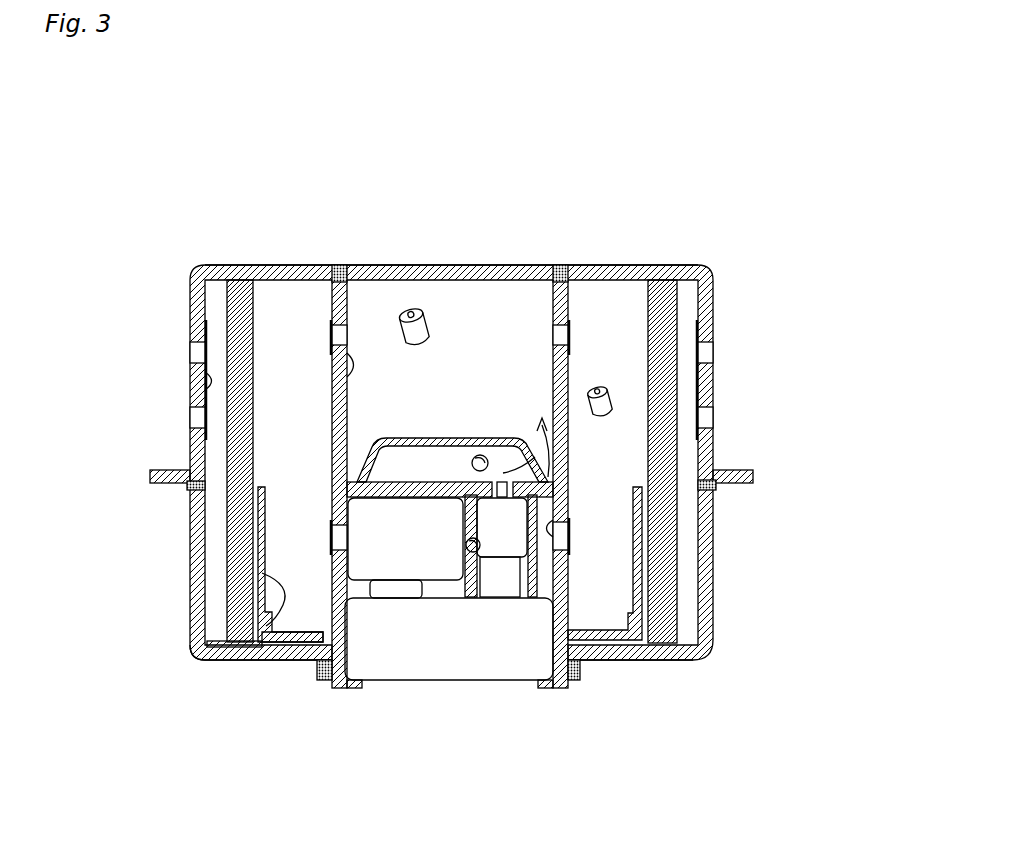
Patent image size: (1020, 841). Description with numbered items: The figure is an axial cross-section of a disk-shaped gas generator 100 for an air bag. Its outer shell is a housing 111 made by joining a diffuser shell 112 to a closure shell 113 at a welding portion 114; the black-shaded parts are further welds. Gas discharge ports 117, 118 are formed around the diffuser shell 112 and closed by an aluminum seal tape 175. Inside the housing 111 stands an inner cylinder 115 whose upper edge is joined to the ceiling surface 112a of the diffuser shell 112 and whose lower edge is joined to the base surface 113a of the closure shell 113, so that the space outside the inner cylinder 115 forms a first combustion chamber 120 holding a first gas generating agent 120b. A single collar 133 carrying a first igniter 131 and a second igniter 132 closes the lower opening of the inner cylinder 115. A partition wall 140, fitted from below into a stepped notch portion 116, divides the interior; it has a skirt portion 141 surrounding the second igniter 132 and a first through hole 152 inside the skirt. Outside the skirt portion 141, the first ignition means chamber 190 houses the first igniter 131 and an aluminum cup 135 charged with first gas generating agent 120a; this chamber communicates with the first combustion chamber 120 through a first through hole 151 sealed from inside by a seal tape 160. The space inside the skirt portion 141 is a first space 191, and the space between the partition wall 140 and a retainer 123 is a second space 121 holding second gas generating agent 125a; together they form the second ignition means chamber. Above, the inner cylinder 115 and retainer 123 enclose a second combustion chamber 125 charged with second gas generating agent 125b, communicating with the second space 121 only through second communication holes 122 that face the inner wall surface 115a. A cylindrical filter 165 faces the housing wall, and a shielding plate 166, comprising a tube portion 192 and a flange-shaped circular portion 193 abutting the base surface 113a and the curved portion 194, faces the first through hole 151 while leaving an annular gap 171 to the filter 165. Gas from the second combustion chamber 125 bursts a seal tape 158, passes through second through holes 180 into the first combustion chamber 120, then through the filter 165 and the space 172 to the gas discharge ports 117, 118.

The gas generator 100 is at (483, 441).
The housing 111 is at (554, 459).
The diffuser shell 112 is at (708, 448).
The ceiling surface 112a is at (275, 277).
The closure shell 113 is at (710, 527).
The base surface 113a is at (267, 663).
The welding portion 114 is at (187, 495).
The inner cylinder 115 is at (307, 660).
The inner wall surface 115a is at (333, 383).
The stepped notch portion 116 is at (330, 475).
The gas discharge port 117 is at (705, 350).
The gas discharge port 118 is at (705, 417).
The first combustion chamber 120 is at (620, 607).
The first gas generating agent 120a is at (466, 546).
The first gas generating agent 120b is at (600, 420).
The second space 121 is at (449, 477).
The second communication holes 122 is at (353, 453).
The retainer 123 is at (492, 437).
The second combustion chamber 125 is at (523, 329).
The second gas generating agent 125a is at (468, 453).
The second gas generating agent 125b is at (410, 312).
The first igniter 131 is at (398, 593).
The second igniter 132 is at (502, 583).
The collar 133 is at (437, 680).
The aluminum cup 135 is at (428, 531).
The partition wall 140 is at (412, 447).
The skirt portion 141 is at (647, 593).
The first through hole 151 is at (333, 540).
The first through hole 152 is at (502, 487).
The seal tape 158 is at (570, 333).
The seal tape 160 is at (562, 525).
The cylindrical filter 165 is at (665, 538).
The shielding plate 166 is at (233, 710).
The annular gap 171 is at (260, 517).
The space 172 is at (683, 620).
The seal tape 175 is at (188, 395).
The second through holes 180 is at (333, 336).
The first ignition means chamber 190 is at (443, 660).
The first space 191 is at (520, 553).
The tube portion 192 is at (237, 657).
The circular portion 193 is at (228, 658).
The curved portion 194 is at (195, 658).